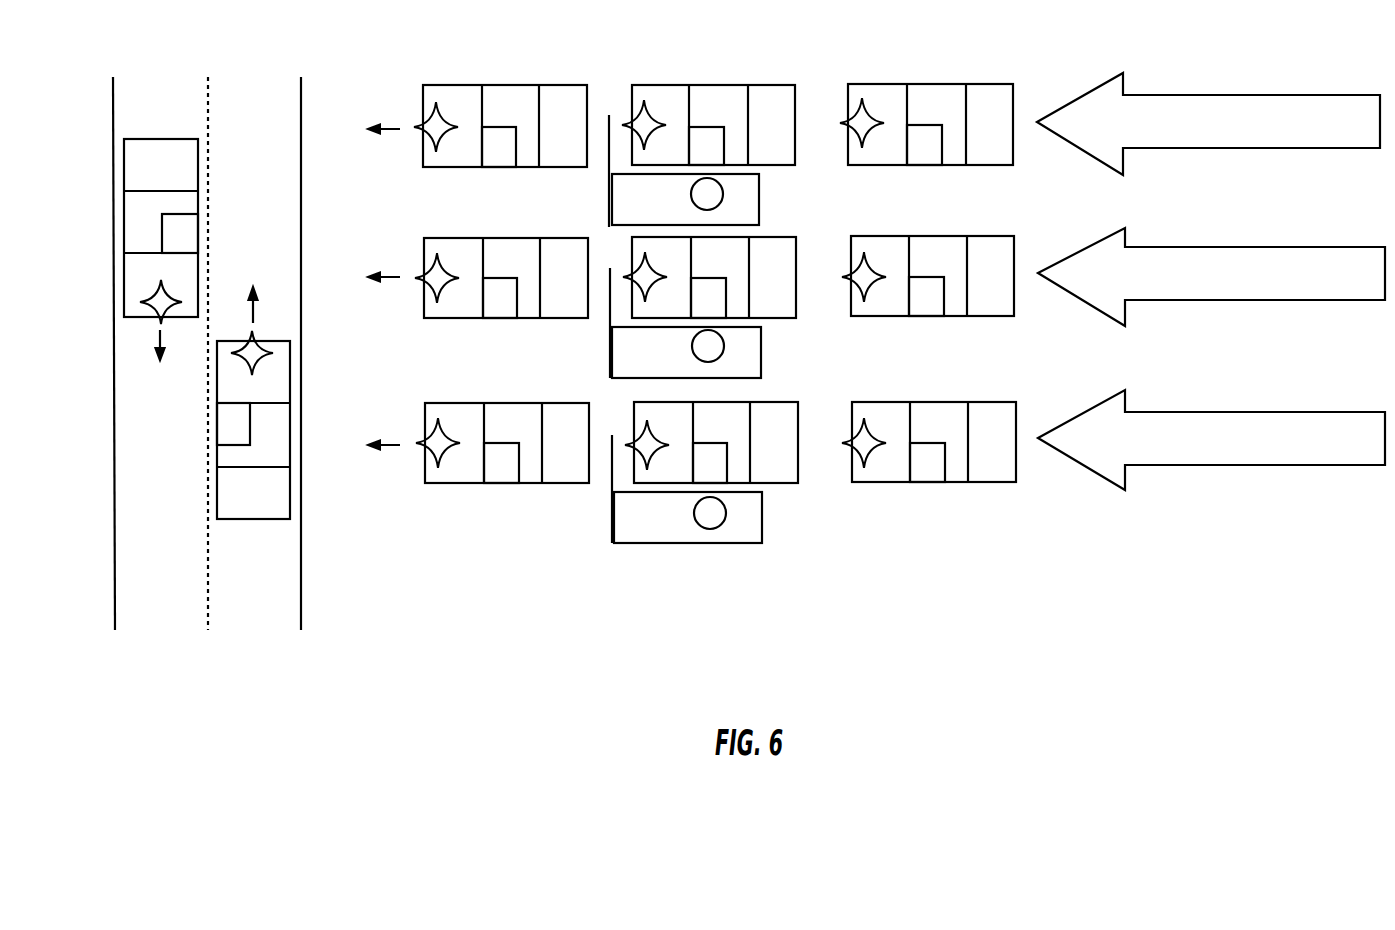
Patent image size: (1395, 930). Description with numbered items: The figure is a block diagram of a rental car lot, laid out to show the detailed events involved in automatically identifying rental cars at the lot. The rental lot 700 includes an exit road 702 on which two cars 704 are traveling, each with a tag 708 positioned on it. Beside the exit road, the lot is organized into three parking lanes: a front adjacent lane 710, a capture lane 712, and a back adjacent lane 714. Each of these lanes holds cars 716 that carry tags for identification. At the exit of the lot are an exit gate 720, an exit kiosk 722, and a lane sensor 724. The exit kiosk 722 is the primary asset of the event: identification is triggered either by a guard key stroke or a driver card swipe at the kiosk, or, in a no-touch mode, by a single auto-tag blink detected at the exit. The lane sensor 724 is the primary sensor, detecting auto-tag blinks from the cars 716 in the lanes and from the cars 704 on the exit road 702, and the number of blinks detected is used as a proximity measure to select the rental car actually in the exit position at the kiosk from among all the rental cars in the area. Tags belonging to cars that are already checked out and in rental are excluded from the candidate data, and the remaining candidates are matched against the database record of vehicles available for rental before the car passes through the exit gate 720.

The rental lot 700 is at (917, 39).
The exit road 702 is at (207, 406).
The cars 704 is at (124, 317).
The tags 708 is at (192, 224).
The front adjacent lane 710 is at (1208, 122).
The capture lane 712 is at (1211, 275).
The back adjacent lane 714 is at (1211, 438).
The cars 716 is at (443, 167).
The exit gate 720 is at (612, 479).
The exit kiosk 722 is at (640, 543).
The lane sensor 724 is at (731, 528).